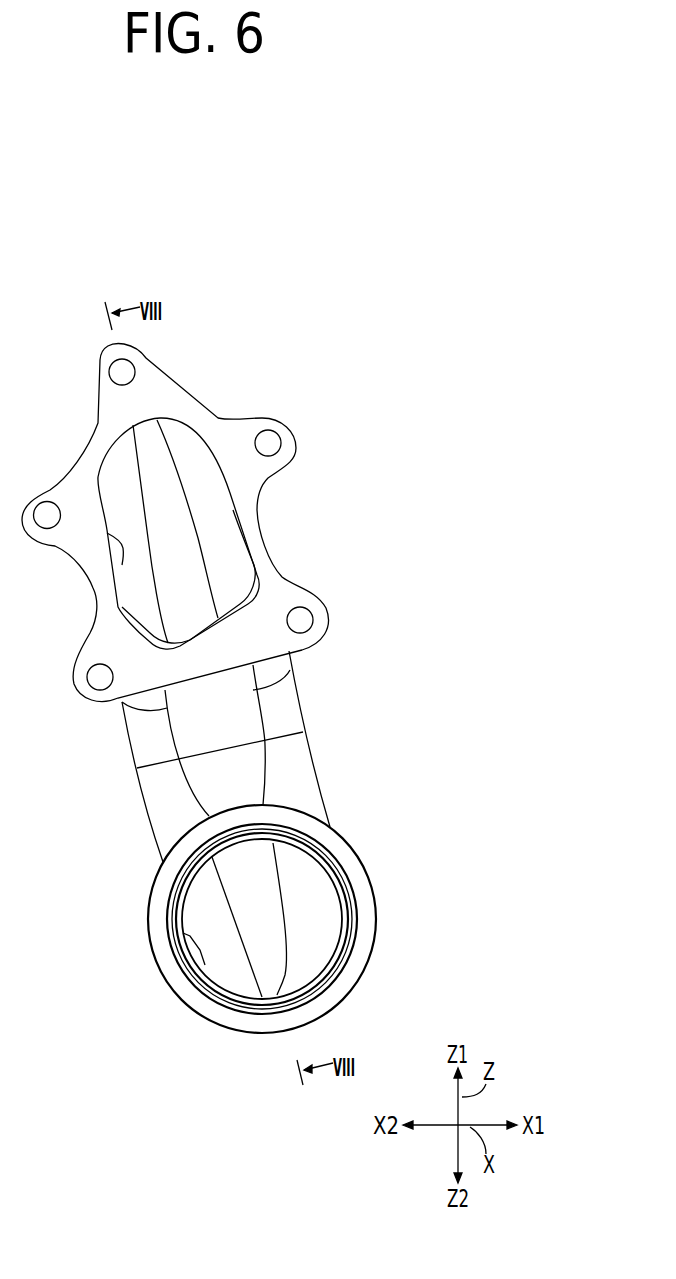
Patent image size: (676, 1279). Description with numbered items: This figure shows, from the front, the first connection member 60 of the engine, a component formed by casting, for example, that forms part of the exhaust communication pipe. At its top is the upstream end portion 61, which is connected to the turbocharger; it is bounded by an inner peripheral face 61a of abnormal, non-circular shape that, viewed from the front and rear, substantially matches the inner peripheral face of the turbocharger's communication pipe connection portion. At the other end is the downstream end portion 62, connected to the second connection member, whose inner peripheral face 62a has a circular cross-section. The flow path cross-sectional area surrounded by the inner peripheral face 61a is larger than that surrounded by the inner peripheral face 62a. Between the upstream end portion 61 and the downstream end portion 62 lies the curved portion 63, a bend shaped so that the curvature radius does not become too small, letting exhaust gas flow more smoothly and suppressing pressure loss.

The first connection member 60 is at (317, 392).
The upstream end portion 61 is at (258, 468).
The inner peripheral face 61a is at (113, 570).
The downstream end portion 62 is at (352, 872).
The inner peripheral face 62a is at (193, 975).
The curved portion 63 is at (290, 705).